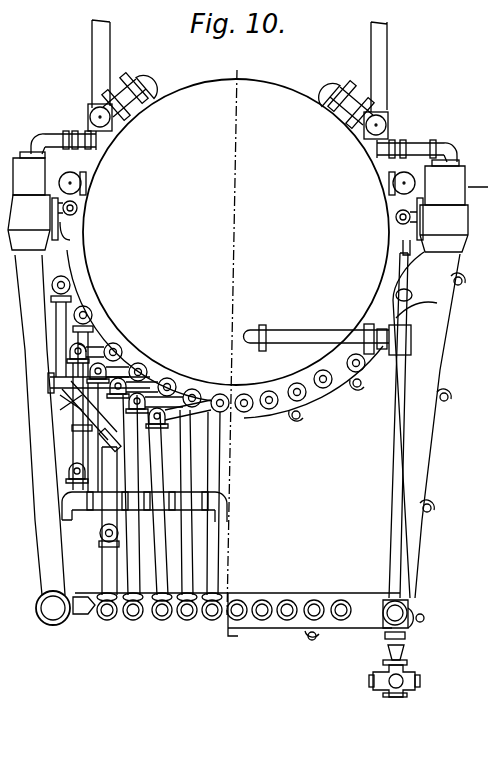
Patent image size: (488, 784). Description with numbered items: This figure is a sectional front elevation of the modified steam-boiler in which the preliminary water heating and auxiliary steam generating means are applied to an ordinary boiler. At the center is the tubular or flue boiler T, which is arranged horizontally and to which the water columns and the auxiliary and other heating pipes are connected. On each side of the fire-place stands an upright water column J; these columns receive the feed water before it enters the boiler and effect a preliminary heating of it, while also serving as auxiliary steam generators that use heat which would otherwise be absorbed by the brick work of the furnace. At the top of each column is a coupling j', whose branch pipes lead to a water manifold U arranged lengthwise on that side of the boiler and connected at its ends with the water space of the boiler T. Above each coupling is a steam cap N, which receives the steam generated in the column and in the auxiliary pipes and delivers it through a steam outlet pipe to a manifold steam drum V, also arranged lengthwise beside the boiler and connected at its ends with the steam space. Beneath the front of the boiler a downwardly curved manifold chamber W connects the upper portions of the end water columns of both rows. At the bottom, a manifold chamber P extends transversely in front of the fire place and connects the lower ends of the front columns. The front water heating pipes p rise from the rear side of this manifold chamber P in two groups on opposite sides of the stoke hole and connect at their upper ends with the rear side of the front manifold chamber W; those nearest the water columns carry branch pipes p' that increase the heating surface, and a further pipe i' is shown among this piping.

The tubular or flue boiler T is at (236, 232).
The manifold steam drum V is at (95, 116).
The water manifold U is at (237, 205).
The steam cap N is at (2, 184).
The coupling j' is at (248, 219).
The water column J is at (233, 438).
The front manifold chamber W is at (276, 408).
The front water heating pipe p is at (138, 435).
The branch pipe p' is at (55, 355).
The diagonal pipe i' is at (62, 488).
The manifold chamber P is at (276, 630).